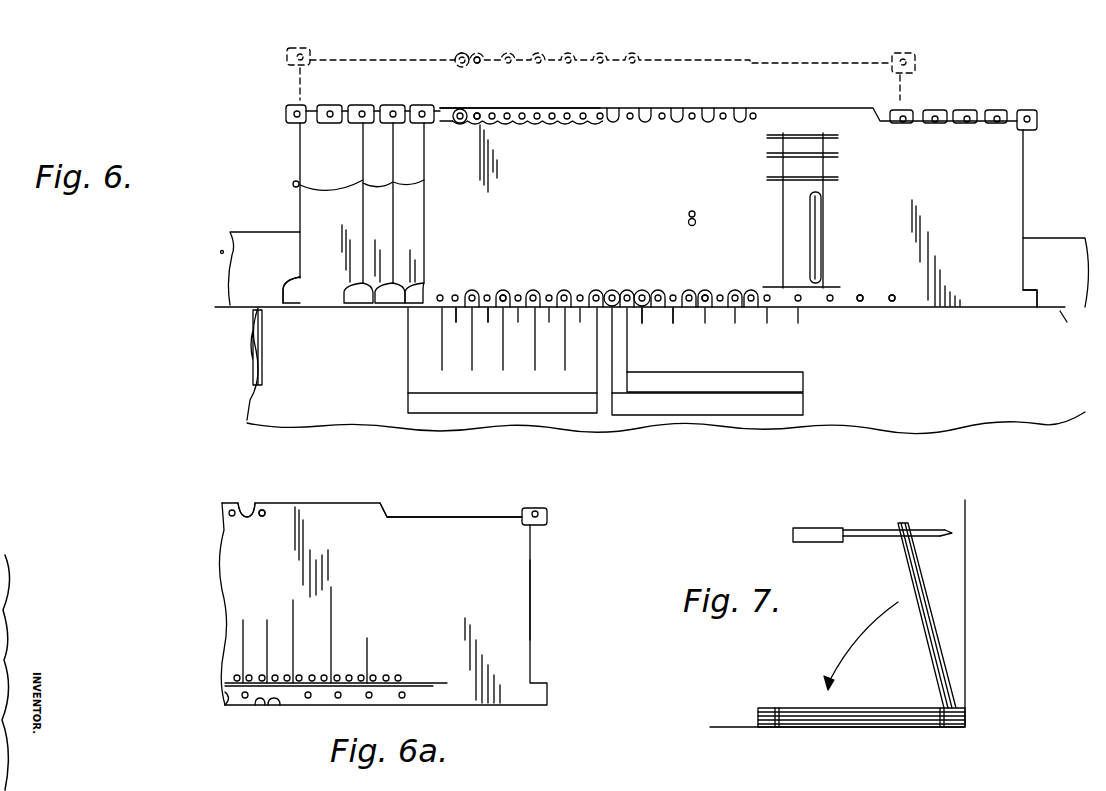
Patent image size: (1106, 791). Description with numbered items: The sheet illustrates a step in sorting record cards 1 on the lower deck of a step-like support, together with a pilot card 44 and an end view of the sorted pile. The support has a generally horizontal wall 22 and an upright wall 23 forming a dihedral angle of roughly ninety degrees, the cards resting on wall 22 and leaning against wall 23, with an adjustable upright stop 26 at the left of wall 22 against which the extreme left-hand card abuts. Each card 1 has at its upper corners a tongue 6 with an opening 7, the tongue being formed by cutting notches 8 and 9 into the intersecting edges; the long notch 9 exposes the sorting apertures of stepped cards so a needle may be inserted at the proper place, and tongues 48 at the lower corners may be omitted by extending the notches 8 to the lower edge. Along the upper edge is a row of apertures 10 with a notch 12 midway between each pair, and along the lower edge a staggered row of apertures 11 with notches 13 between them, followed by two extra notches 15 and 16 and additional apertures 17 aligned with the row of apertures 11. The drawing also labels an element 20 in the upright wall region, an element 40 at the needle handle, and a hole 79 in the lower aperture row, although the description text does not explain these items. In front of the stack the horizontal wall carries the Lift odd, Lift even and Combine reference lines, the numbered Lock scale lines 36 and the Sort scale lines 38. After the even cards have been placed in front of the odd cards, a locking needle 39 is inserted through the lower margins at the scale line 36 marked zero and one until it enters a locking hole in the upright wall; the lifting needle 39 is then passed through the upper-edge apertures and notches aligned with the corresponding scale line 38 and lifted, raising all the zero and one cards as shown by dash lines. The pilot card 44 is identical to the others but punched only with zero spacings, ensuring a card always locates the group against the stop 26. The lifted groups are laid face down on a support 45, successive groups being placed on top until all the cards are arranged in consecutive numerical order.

In FIG. 6, the record card 1 is at (1008, 212).
In FIG. 6A, the record card 1 is at (342, 516).
In FIG. 7, the record card 1 is at (907, 558).
In FIG. 6, the tongue 6 is at (292, 50).
In FIG. 6A, the tongue 6 is at (548, 522).
In FIG. 6, the opening 7 is at (303, 56).
In FIG. 6A, the opening 7 is at (536, 511).
In FIG. 6, the notch 8 is at (393, 183).
In FIG. 6A, the notch 8 is at (533, 582).
In FIG. 6, the notch 9 is at (415, 60).
In FIG. 6A, the notch 9 is at (478, 517).
In FIG. 6A, the apertures 10 is at (273, 511).
In FIG. 6A, the apertures 11 is at (232, 696).
In FIG. 6A, the notch 12 is at (247, 511).
In FIG. 6, the notch 13 is at (702, 296).
In FIG. 6A, the notch 15 is at (258, 705).
In FIG. 6A, the notch 16 is at (276, 705).
In FIG. 6, the apertures 17 is at (892, 296).
In FIG. 6A, the apertures 17 is at (308, 700).
In FIG. 6, the slot / row of holes 20 is at (820, 207).
In FIG. 6A, the slot / row of holes 20 is at (398, 676).
In FIG. 6, the horizontal wall 22 is at (250, 405).
In FIG. 6, the upright wall 23 is at (255, 274).
In FIG. 6, the stop 26 is at (263, 330).
In FIG. 6, the scale line 36 is at (673, 324).
In FIG. 6, the scale line 38 is at (488, 320).
In FIG. 6, the needle 39 is at (458, 64).
In FIG. 7, the needle 39 is at (925, 522).
In FIG. 6, the selector rod 40 is at (480, 65).
In FIG. 7, the selector rod 40 is at (812, 528).
In FIG. 6A, the pilot card 44 is at (390, 538).
In FIG. 7, the support 45 is at (725, 727).
In FIG. 6, the tongue 48 is at (378, 290).
In FIG. 6, the hole 79 is at (503, 296).